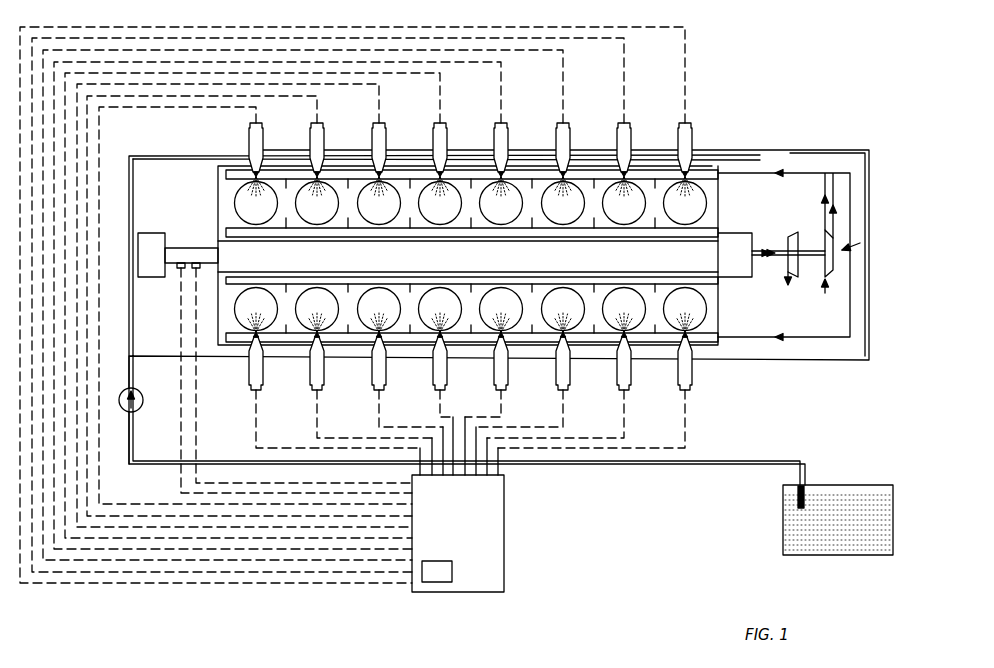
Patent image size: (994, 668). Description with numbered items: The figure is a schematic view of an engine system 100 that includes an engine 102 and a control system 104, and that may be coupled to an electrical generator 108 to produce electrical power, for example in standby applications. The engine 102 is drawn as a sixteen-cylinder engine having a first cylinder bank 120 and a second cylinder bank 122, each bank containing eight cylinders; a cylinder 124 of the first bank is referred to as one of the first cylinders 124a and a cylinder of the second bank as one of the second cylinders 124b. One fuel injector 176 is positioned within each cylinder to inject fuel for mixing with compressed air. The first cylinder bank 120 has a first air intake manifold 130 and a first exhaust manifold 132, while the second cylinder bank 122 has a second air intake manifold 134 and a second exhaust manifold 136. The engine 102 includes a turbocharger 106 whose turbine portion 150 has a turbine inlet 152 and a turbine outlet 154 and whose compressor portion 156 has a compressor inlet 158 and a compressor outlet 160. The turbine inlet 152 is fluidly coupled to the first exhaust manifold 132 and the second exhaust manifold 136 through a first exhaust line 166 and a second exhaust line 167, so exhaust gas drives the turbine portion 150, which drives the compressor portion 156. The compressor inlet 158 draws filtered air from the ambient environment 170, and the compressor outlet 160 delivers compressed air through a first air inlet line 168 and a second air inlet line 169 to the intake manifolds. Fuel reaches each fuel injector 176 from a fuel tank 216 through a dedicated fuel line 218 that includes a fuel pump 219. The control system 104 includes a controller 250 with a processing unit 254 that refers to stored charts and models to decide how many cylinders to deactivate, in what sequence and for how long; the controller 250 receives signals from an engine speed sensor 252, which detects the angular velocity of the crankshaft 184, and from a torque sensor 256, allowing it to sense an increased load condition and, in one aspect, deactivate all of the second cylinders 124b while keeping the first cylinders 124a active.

The engine system 100 is at (866, 102).
The engine 102 is at (720, 196).
The control system 104 is at (508, 545).
The turbocharger 106 is at (860, 243).
The electrical generator 108 is at (150, 233).
The first cylinder bank 120 is at (218, 355).
The second cylinder bank 122 is at (216, 168).
The cylinder 124 is at (266, 205).
The first cylinders 124a is at (316, 298).
The second cylinders 124b is at (290, 218).
The first air intake manifold 130 is at (710, 343).
The first exhaust manifold 132 is at (722, 283).
The second air intake manifold 134 is at (712, 172).
The second exhaust manifold 136 is at (722, 234).
The turbine portion 150 is at (806, 262).
The turbine inlet 152 is at (790, 236).
The turbine outlet 154 is at (786, 280).
The compressor portion 156 is at (834, 264).
The compressor inlet 158 is at (829, 286).
The compressor outlet 160 is at (836, 238).
The first exhaust line 166 is at (758, 238).
The second exhaust line 167 is at (758, 280).
The first air inlet line 168 is at (812, 172).
The second air inlet line 169 is at (818, 359).
The ambient environment 170 is at (926, 464).
The fuel injector 176 is at (263, 127).
The crankshaft 184 is at (178, 248).
The fuel tank 216 is at (893, 521).
The fuel line 218 is at (692, 467).
The fuel pump 219 is at (128, 412).
The controller 250 is at (505, 567).
The engine speed sensor 252 is at (181, 300).
The processing unit 254 is at (430, 582).
The torque sensor 256 is at (192, 262).